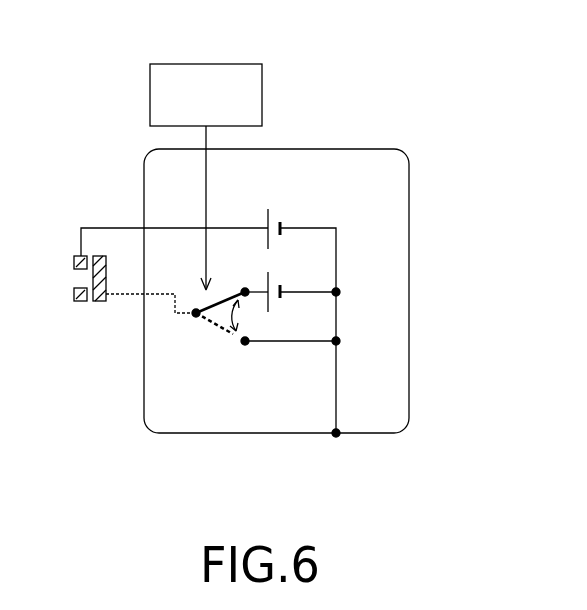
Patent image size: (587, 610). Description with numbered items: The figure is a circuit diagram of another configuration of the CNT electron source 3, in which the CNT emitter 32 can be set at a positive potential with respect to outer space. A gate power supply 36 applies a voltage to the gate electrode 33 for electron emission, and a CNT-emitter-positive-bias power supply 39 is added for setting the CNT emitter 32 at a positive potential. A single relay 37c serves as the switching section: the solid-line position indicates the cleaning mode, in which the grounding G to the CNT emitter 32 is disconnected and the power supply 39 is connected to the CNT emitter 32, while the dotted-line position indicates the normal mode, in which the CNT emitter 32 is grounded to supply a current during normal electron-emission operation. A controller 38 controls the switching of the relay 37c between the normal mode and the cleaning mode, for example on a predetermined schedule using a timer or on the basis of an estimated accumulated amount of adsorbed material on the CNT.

The CNT electron source 3 is at (309, 122).
The CNT emitter 32 is at (100, 302).
The gate electrode 33 is at (80, 302).
The gate power supply 36 is at (275, 215).
The relay 37c is at (222, 331).
The controller 38 is at (150, 88).
The CNT-emitter-positive-bias power supply 39 is at (260, 286).
The grounding G is at (240, 434).